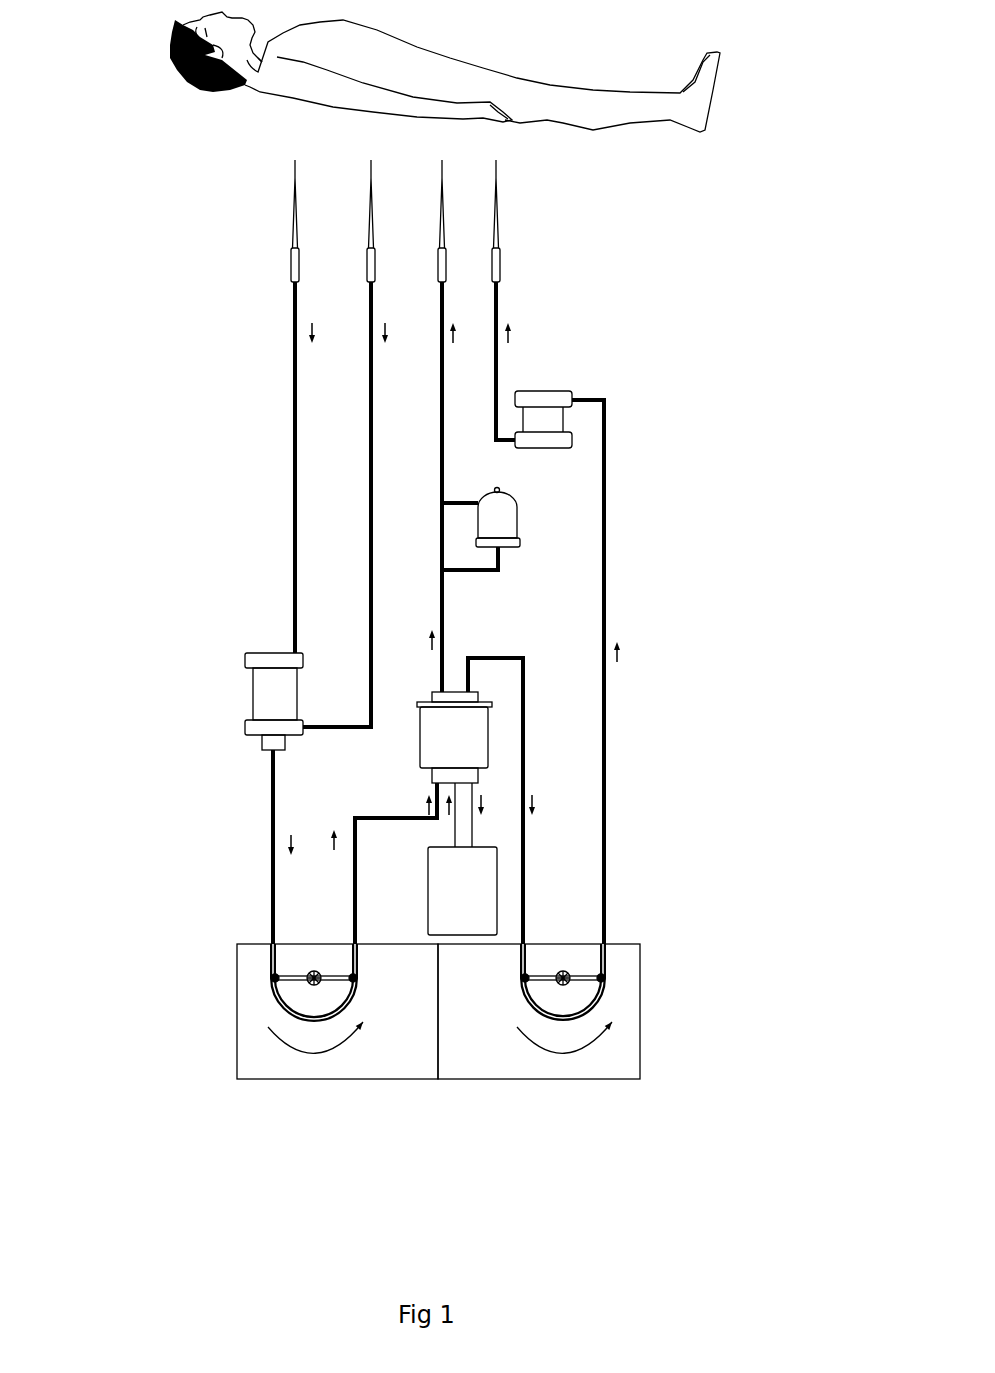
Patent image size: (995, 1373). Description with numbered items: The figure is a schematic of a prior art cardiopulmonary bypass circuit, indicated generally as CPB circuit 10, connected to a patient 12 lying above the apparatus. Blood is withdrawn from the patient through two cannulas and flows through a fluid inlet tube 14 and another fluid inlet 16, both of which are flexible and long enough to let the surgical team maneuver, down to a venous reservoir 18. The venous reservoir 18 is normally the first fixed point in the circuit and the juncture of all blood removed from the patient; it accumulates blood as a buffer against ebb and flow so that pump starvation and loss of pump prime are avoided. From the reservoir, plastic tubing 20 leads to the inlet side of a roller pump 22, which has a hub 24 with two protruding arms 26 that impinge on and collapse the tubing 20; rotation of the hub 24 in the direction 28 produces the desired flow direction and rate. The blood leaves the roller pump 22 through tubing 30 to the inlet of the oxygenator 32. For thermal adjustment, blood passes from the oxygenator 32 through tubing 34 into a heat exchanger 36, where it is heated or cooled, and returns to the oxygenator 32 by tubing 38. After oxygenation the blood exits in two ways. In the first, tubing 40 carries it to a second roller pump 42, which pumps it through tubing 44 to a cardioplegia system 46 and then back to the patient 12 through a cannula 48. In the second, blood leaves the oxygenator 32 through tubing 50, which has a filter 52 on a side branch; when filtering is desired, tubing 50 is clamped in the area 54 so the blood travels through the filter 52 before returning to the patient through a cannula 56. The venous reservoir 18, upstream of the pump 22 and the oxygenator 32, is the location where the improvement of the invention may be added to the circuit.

The CPB circuit 10 is at (771, 208).
The patient 12 is at (389, 93).
The fluid inlet tube 14 is at (293, 408).
The fluid inlet 16 is at (369, 492).
The venous reservoir 18 is at (287, 706).
The plastic tubing 20 is at (271, 826).
The roller pump 22 is at (237, 993).
The hub 24 is at (230, 1030).
The arms 26 is at (248, 939).
The direction of rotation 28 is at (265, 1088).
The tubing 30 is at (359, 799).
The oxygenator 32 is at (463, 753).
The tubing 34 is at (475, 827).
The heat exchanger 36 is at (475, 914).
The tubing 38 is at (450, 838).
The tubing 40 is at (527, 702).
The roller pump 42 is at (640, 978).
The tubing 44 is at (610, 778).
The cardioplegia system 46 is at (589, 401).
The cannula 48 is at (500, 258).
The tubing 50 is at (445, 610).
The filter 52 is at (520, 523).
The clamping area 54 is at (440, 537).
The cannula 56 is at (440, 267).